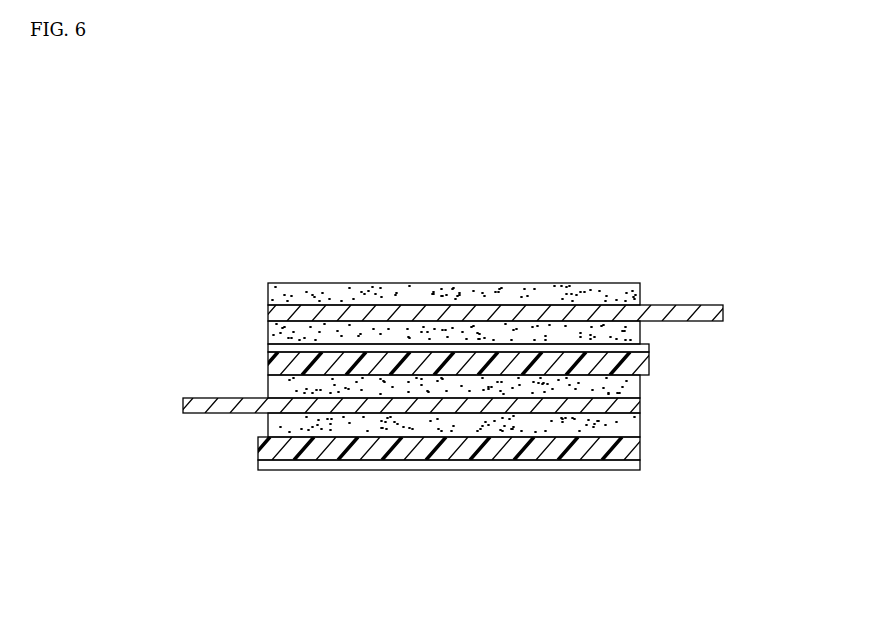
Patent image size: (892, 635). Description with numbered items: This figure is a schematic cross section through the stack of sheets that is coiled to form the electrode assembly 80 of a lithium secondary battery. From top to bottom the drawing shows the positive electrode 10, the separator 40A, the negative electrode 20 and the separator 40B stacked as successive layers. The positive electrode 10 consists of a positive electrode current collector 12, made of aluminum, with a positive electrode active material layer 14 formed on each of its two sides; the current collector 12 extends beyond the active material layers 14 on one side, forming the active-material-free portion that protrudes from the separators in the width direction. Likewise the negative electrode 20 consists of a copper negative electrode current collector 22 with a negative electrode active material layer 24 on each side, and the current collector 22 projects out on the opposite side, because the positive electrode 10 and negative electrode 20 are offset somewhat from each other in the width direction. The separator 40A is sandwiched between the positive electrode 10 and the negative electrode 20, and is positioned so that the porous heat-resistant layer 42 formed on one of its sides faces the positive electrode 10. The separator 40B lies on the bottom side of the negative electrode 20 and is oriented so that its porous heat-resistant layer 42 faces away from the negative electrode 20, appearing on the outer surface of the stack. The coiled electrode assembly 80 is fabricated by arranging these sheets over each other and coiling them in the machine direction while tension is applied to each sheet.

The electrode assembly 80 is at (612, 236).
The positive electrode 10 is at (541, 311).
The positive electrode active material layer 14 is at (641, 291).
The positive electrode current collector 12 is at (724, 312).
The porous heat-resistant layer 42 is at (650, 347).
The separator 40A is at (650, 374).
The separator 40B is at (259, 452).
The negative electrode 20 is at (362, 407).
The negative electrode active material layer 24 is at (267, 386).
The negative electrode current collector 22 is at (184, 405).